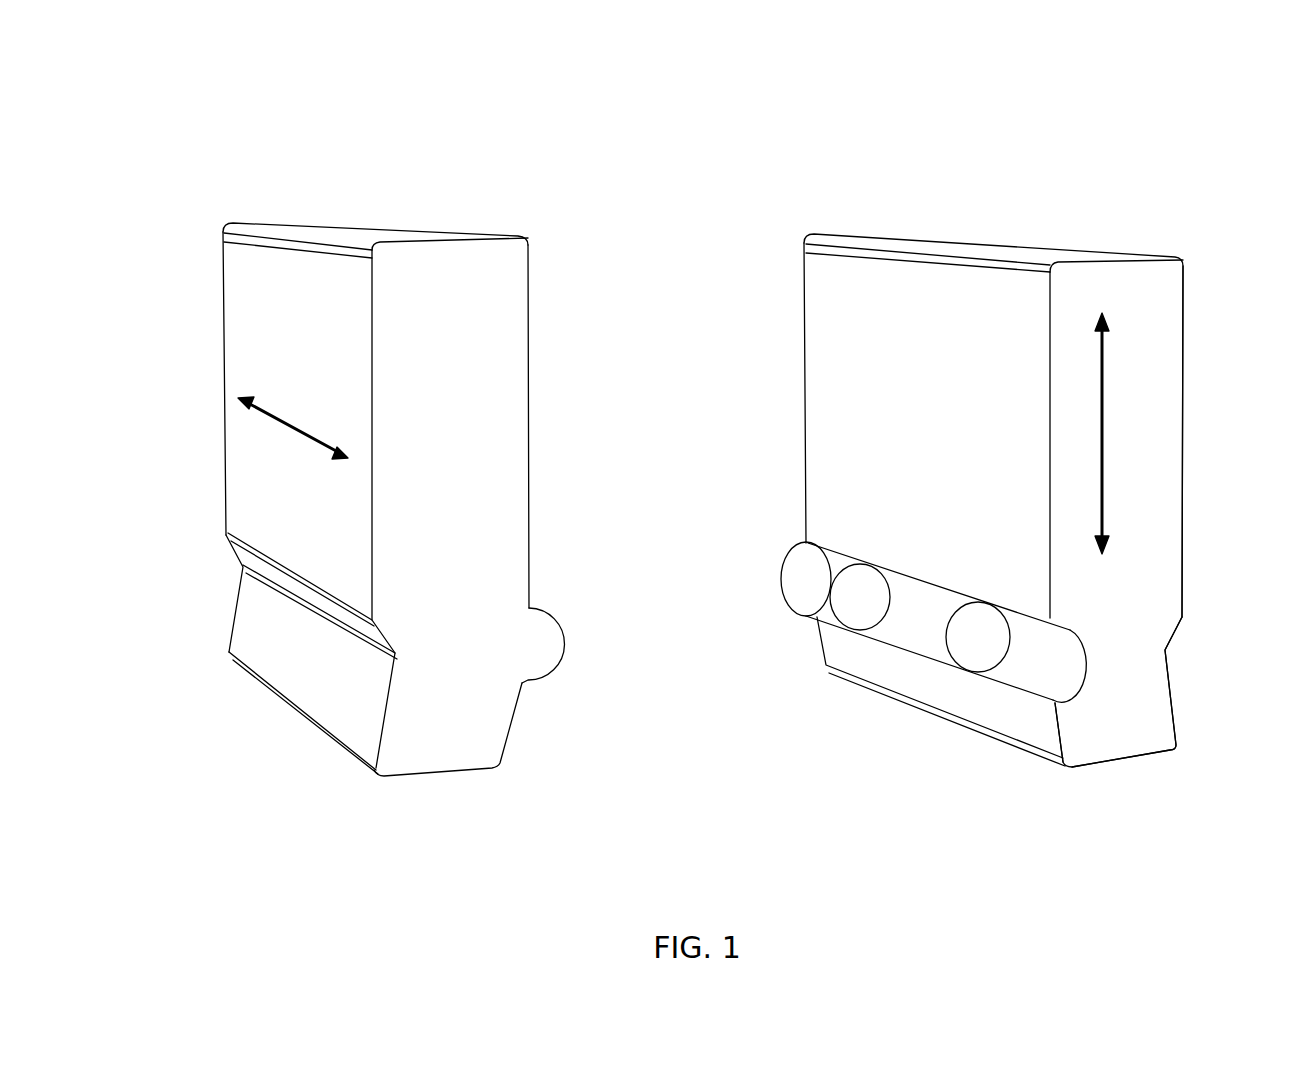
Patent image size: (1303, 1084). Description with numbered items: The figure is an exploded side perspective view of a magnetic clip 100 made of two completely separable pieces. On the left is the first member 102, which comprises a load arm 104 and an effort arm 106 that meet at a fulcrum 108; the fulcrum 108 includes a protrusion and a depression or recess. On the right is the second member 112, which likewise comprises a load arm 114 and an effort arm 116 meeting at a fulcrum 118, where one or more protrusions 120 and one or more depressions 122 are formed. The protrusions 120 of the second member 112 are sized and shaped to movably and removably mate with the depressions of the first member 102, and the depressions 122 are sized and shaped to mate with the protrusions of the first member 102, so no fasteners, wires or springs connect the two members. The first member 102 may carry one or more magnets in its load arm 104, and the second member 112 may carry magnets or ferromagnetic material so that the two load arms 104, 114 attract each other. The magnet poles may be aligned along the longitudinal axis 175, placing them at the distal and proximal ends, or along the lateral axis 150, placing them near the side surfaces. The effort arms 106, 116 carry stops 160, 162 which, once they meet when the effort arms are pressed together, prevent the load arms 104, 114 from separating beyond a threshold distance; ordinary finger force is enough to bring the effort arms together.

The magnetic clip 100 is at (1197, 492).
The first member 102 is at (220, 233).
The load arm 104 is at (205, 367).
The effort arm 106 is at (228, 653).
The fulcrum 108 is at (570, 660).
The second member 112 is at (800, 258).
The load arm 114 is at (1188, 300).
The effort arm 116 is at (1180, 748).
The fulcrum 118 is at (773, 562).
The protrusions 120 is at (918, 620).
The depressions 122 is at (1015, 682).
The lateral axis 150 is at (300, 438).
The stop 160 is at (523, 745).
The stop 162 is at (1055, 750).
The longitudinal axis 175 is at (1103, 405).